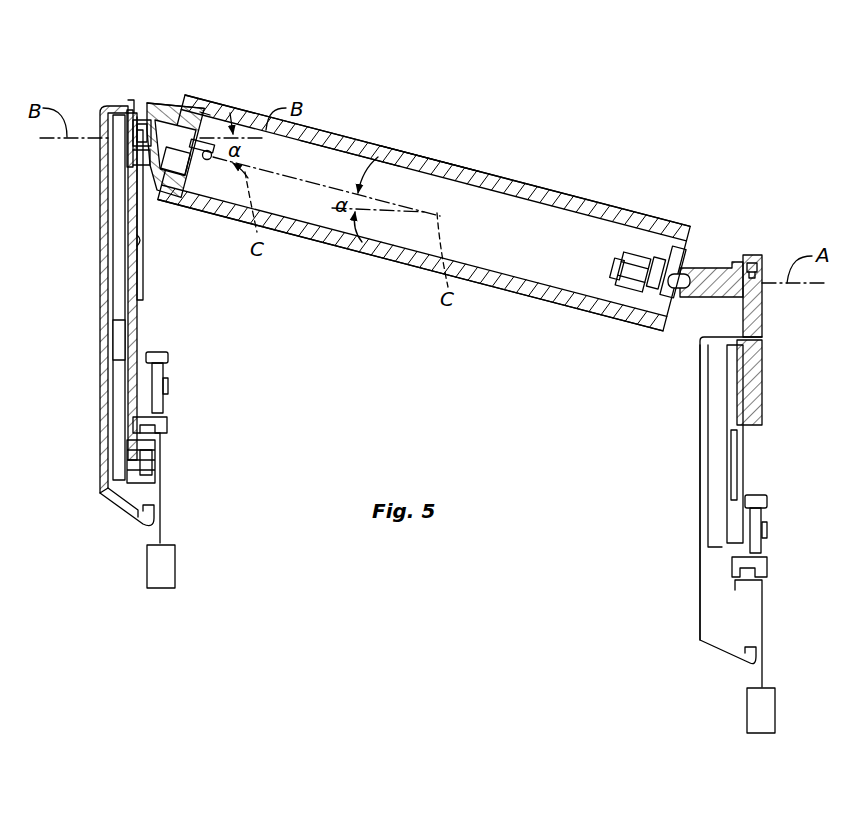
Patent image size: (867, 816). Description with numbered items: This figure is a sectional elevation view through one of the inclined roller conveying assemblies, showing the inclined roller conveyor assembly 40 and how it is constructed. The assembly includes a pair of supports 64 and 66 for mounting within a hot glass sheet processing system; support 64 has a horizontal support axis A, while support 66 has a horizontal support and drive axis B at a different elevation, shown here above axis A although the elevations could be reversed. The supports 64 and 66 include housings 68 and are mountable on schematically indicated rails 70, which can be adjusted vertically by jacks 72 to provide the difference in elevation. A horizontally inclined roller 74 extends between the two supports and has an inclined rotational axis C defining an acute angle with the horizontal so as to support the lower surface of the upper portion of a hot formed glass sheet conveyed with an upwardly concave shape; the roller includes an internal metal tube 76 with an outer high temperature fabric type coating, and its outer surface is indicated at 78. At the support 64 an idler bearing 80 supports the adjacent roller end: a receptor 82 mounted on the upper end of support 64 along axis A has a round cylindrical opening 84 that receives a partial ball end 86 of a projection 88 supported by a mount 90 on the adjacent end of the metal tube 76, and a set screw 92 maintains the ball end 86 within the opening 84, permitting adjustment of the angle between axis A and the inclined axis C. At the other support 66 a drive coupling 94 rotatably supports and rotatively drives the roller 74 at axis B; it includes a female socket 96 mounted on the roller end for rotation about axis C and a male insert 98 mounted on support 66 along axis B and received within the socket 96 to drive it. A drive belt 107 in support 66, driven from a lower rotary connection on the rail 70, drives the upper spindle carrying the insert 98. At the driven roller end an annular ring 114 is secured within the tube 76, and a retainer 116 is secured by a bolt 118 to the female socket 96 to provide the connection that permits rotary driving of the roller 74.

The inclined roller conveyor assembly 40 is at (487, 135).
The support 64 is at (697, 520).
The support 66 is at (97, 338).
The housing 68 is at (100, 263).
The rail 70 is at (163, 490).
The jack 72 is at (177, 567).
The horizontally inclined roller 74 is at (503, 180).
The internal metal tube 76 is at (345, 131).
The outer surface 78 is at (413, 152).
The idler bearing 80 is at (717, 267).
The receptor 82 is at (760, 253).
The round cylindrical opening 84 is at (727, 300).
The partial ball end 86 is at (657, 310).
The projection 88 is at (670, 265).
The mount 90 is at (633, 295).
The set screw 92 is at (709, 255).
The drive coupling 94 is at (158, 92).
The female socket 96 is at (172, 93).
The male insert 98 is at (143, 108).
The drive belt 107 is at (118, 238).
The annular ring 114 is at (202, 128).
The retainer 116 is at (233, 100).
The bolt 118 is at (190, 152).